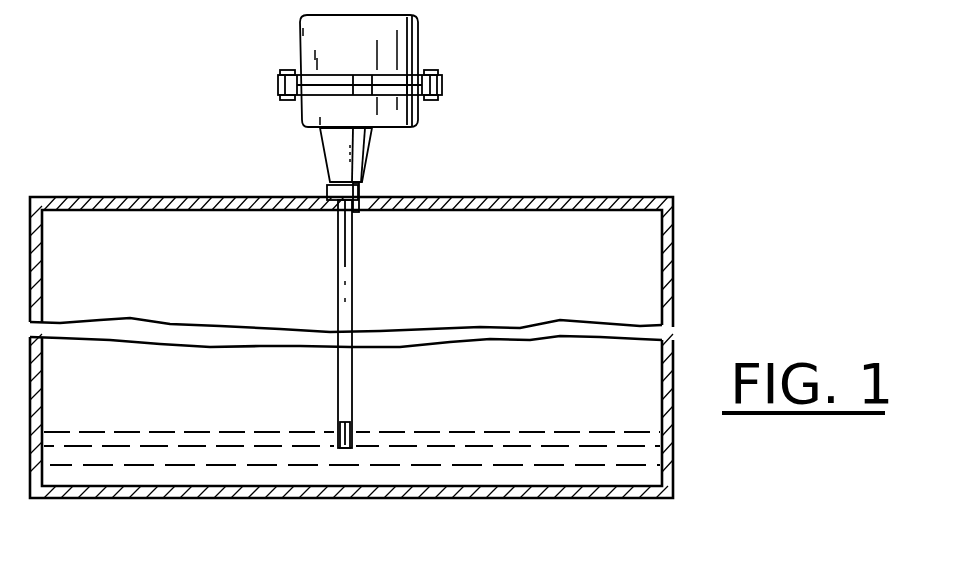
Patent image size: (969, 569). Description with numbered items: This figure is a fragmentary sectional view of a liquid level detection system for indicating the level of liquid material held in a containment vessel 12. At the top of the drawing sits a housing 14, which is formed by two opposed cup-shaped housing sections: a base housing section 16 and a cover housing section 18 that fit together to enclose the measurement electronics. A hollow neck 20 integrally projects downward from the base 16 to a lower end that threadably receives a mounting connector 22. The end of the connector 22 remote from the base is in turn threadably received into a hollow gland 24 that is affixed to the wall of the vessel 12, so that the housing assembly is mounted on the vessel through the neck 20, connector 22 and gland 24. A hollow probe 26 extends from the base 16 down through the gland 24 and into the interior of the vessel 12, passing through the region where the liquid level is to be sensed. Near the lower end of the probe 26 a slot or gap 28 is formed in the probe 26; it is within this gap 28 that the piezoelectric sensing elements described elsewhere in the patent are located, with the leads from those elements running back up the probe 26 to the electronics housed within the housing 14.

The containment vessel 12 is at (672, 222).
The housing 14 is at (368, 224).
The base housing section 16 is at (302, 107).
The cover housing section 18 is at (310, 42).
The hollow neck 20 is at (355, 152).
The mounting connector 22 is at (333, 182).
The hollow gland 24 is at (360, 212).
The hollow probe 26 is at (338, 262).
The slot or gap 28 is at (350, 430).